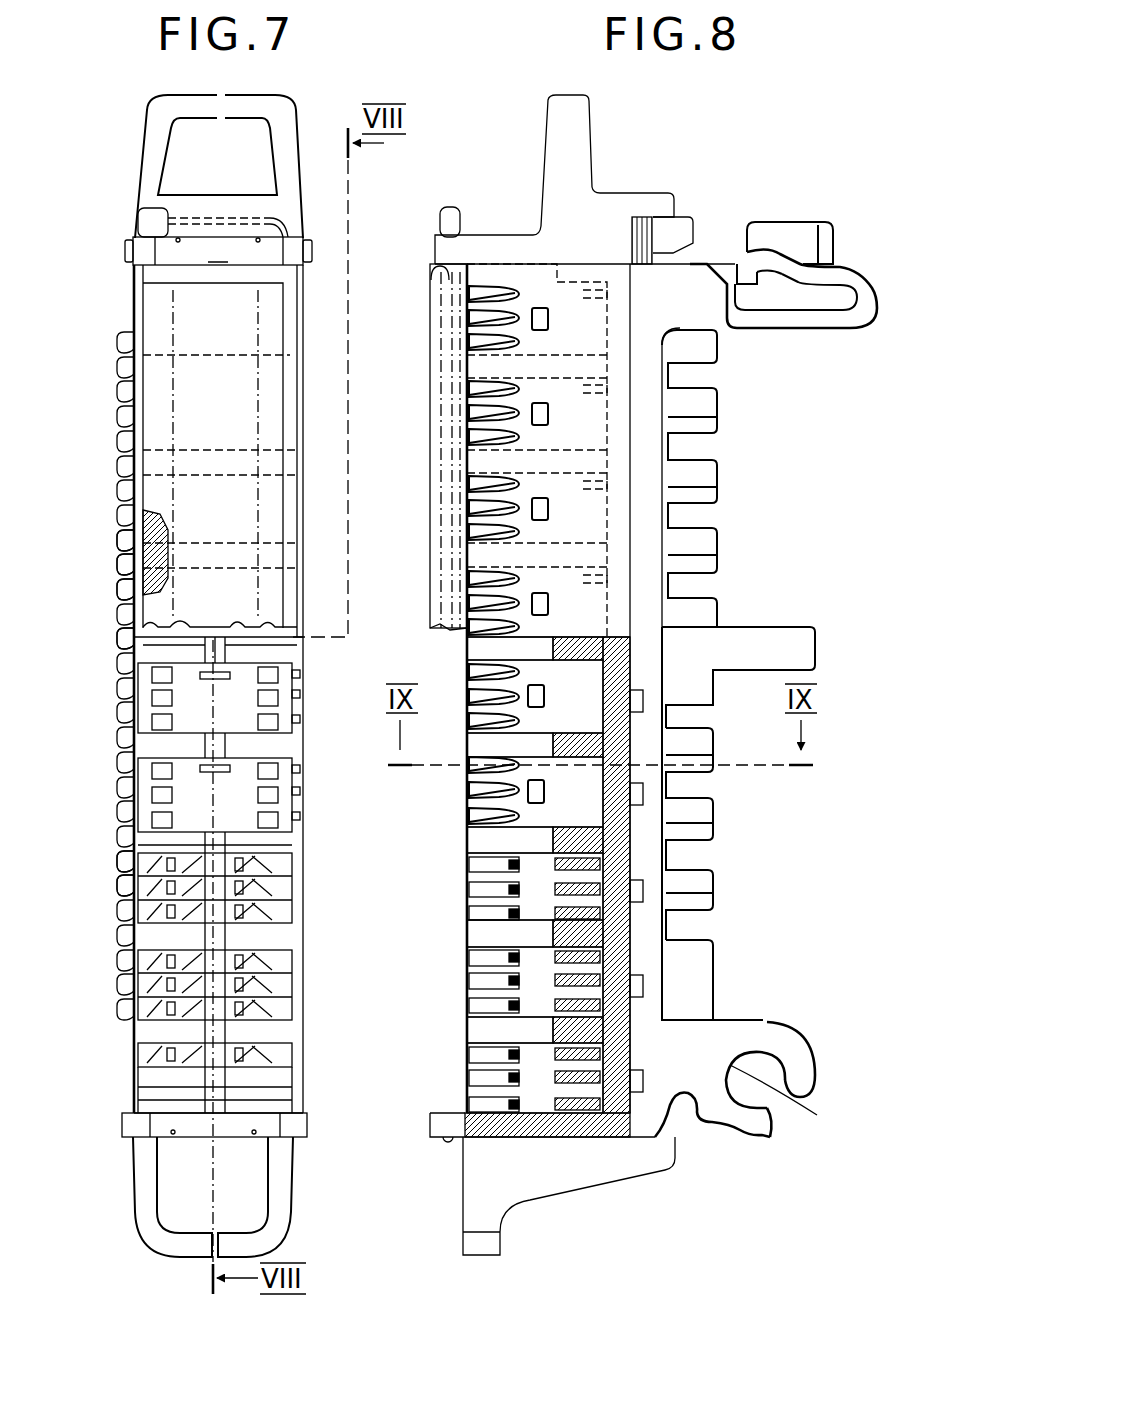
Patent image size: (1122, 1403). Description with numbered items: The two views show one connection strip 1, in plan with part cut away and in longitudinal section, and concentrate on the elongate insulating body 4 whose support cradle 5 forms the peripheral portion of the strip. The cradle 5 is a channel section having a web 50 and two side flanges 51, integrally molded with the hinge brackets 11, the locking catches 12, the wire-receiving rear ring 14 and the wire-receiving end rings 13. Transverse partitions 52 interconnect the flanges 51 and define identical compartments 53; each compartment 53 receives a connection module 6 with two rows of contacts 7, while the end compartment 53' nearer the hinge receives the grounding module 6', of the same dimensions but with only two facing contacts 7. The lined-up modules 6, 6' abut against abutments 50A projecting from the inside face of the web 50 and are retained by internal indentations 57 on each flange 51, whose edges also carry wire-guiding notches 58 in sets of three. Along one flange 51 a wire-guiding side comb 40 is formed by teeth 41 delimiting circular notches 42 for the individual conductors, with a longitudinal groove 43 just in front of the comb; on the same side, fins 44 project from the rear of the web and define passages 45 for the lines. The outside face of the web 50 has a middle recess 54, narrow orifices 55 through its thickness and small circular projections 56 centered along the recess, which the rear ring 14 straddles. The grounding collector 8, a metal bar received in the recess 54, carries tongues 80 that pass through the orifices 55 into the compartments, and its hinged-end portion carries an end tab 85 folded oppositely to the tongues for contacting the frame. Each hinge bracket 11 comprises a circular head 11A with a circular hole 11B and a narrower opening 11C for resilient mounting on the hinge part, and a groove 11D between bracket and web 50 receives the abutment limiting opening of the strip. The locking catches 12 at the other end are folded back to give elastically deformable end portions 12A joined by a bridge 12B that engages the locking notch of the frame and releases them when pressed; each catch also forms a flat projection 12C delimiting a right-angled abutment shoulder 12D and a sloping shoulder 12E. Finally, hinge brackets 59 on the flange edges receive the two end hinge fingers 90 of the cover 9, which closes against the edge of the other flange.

In FIG. 7, the connection strip 1 is at (131, 313).
In FIG. 7, the elongate insulating body 4 is at (302, 934).
In FIG. 8, the elongate insulating body 4 is at (584, 1199).
In FIG. 7, the support cradle 5 is at (305, 402).
In FIG. 7, the connection modules 6 is at (181, 910).
In FIG. 7, the end module 6' is at (181, 1083).
In FIG. 7, the contacts 7 is at (140, 1060).
In FIG. 7, the grounding collector 8 is at (255, 845).
In FIG. 8, the grounding collector 8 is at (634, 775).
In FIG. 7, the cover 9 is at (147, 295).
In FIG. 8, the cover 9 is at (440, 470).
In FIG. 8, the hinge brackets 11 is at (769, 1139).
In FIG. 8, the circular head 11A is at (770, 1035).
In FIG. 8, the circular hole 11B is at (780, 1100).
In FIG. 8, the opening 11C is at (772, 1115).
In FIG. 8, the groove 11D is at (680, 1110).
In FIG. 8, the locking catches 12 is at (879, 285).
In FIG. 8, the elastically deformable end portion 12A is at (805, 275).
In FIG. 8, the bridge 12B is at (807, 252).
In FIG. 8, the flat projection 12C is at (762, 252).
In FIG. 8, the right-angled abutment shoulder 12D is at (743, 260).
In FIG. 8, the sloping shoulder 12E is at (787, 258).
In FIG. 7, the wire-receiving end rings 13 is at (140, 1192).
In FIG. 8, the wire-receiving end rings 13 is at (462, 1165).
In FIG. 8, the wire-receiving rear ring 14 is at (745, 625).
In FIG. 7, the wire-guiding side comb 40 is at (128, 906).
In FIG. 7, the teeth 41 is at (130, 542).
In FIG. 7, the circular notches 42 is at (130, 555).
In FIG. 7, the longitudinal groove 43 is at (135, 512).
In FIG. 8, the fins 44 is at (690, 895).
In FIG. 8, the passages 45 is at (690, 925).
In FIG. 7, the web 50 is at (135, 580).
In FIG. 8, the web 50 is at (630, 1035).
In FIG. 7, the abutments 50A is at (130, 650).
In FIG. 8, the abutments 50A is at (630, 660).
In FIG. 7, the side flanges 51 is at (130, 715).
In FIG. 7, the transverse partitions 52 is at (155, 750).
In FIG. 8, the transverse partitions 52 is at (500, 930).
In FIG. 7, the compartments 53 is at (300, 810).
In FIG. 8, the compartments 53 is at (511, 792).
In FIG. 7, the contact finger 53' is at (253, 985).
In FIG. 8, the middle recess 54 is at (650, 442).
In FIG. 7, the narrow orifices 55 is at (210, 680).
In FIG. 8, the small circular projections 56 is at (632, 800).
In FIG. 8, the internal indentations 57 is at (525, 790).
In FIG. 8, the wire-guiding notches 58 is at (488, 718).
In FIG. 7, the hinge brackets 59 is at (312, 262).
In FIG. 8, the hinge brackets 59 is at (455, 208).
In FIG. 7, the tongues 80 is at (160, 675).
In FIG. 8, the tongues 80 is at (590, 770).
In FIG. 8, the end tab 85 is at (680, 225).
In FIG. 7, the end hinge fingers 90 is at (150, 225).
In FIG. 8, the end hinge fingers 90 is at (433, 268).